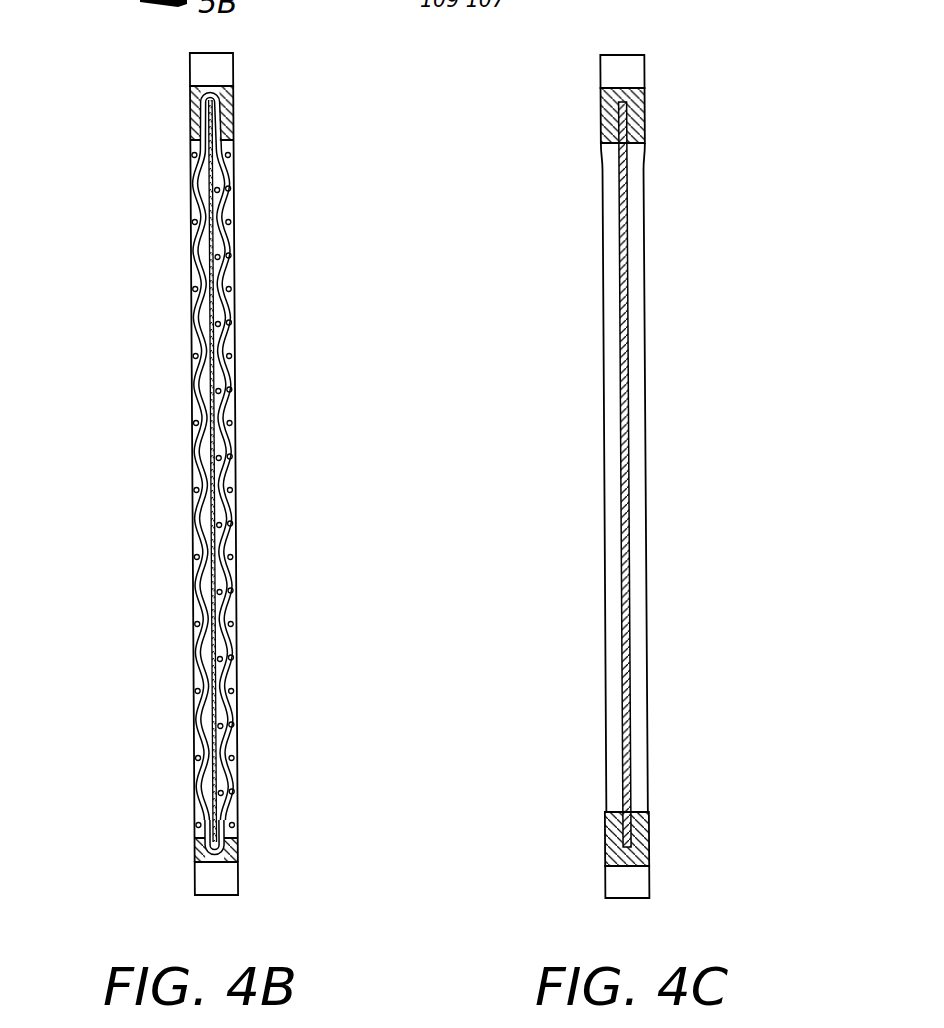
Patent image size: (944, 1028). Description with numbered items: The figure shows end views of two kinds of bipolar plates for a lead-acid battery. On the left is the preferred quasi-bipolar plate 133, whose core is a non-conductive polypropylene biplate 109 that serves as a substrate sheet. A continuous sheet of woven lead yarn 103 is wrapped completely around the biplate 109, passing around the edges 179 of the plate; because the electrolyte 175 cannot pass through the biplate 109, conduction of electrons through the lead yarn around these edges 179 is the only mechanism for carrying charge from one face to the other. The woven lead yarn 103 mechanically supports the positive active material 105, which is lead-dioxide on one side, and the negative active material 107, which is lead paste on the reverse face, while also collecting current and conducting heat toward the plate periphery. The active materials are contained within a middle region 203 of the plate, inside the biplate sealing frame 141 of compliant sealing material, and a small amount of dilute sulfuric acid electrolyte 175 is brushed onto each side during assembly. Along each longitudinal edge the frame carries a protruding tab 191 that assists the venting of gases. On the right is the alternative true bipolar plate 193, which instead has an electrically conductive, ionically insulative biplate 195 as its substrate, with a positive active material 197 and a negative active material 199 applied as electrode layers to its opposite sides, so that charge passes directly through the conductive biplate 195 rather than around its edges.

In FIG. 4B, the woven lead yarn 103 is at (190, 105).
In FIG. 4B, the positive active material 105 is at (283, 381).
In FIG. 4B, the negative active material 107 is at (156, 367).
In FIG. 4B, the biplate 109 is at (215, 406).
In FIG. 4C, the biplate 109 is at (627, 291).
In FIG. 4B, the bipolar plate 133 is at (168, 684).
In FIG. 4B, the biplate sealing frame 141 is at (190, 118).
In FIG. 4C, the biplate sealing frame 141 is at (645, 115).
In FIG. 4B, the electrolyte 175 is at (222, 298).
In FIG. 4B, the edges of the bipolar plates 179 is at (212, 97).
In FIG. 4B, the protruding tab 191 is at (189, 60).
In FIG. 4C, the protruding tab 191 is at (601, 68).
In FIG. 4C, the true bipolar plate 193 is at (570, 761).
In FIG. 4C, the conductive biplate 195 is at (625, 474).
In FIG. 4C, the positive active material 197 is at (604, 493).
In FIG. 4C, the negative active material 199 is at (648, 427).
In FIG. 4B, the middle region 203 is at (190, 420).